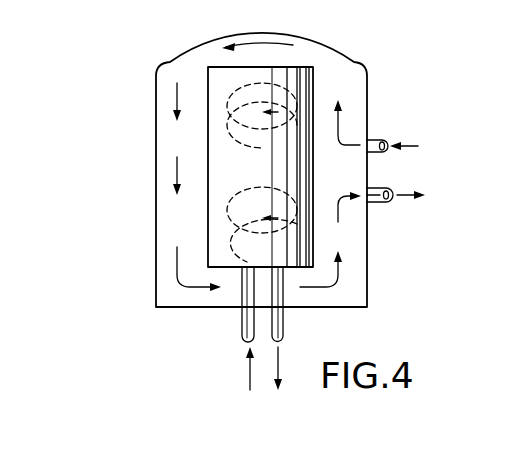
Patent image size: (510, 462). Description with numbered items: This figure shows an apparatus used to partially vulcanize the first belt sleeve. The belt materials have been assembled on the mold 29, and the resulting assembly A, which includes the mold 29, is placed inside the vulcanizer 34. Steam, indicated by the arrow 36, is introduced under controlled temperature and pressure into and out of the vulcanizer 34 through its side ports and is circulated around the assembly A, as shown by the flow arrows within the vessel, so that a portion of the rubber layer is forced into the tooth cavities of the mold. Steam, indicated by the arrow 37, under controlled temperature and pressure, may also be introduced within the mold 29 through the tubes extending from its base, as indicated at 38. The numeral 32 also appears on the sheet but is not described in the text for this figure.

The mold 29 is at (211, 66).
The vulcanizer apparatus 34 is at (127, 112).
The arrow indicating steam 36 is at (418, 146).
The arrow indicating steam 37 is at (249, 369).
The location of steam introduction within mold 38 is at (220, 228).
The assembly A is at (220, 187).
The conduit 32 is at (20, 447).